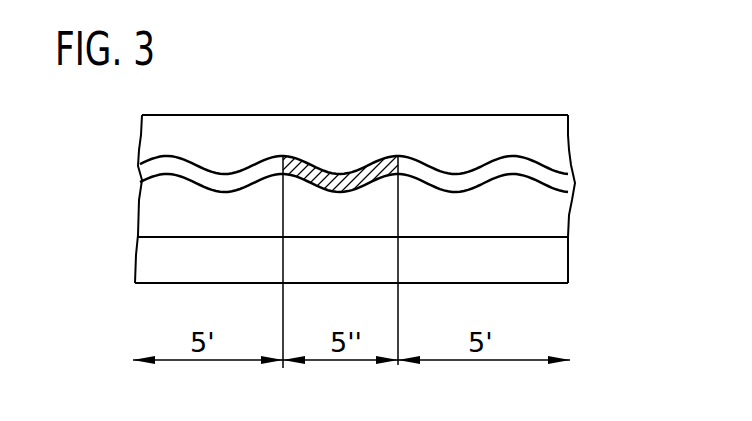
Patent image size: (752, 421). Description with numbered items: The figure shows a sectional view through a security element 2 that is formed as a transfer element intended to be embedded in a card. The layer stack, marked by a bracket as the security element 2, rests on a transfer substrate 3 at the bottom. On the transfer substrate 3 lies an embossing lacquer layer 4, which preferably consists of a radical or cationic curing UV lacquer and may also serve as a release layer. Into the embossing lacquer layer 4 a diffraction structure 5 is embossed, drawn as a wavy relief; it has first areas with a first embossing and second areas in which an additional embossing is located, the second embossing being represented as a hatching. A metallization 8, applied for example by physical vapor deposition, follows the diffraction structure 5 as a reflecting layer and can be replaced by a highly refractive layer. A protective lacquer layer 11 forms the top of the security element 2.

The security element 2 is at (113, 110).
The transfer substrate 3 is at (563, 265).
The embossing lacquer layer 4 is at (563, 222).
The diffraction structure 5 is at (562, 188).
The metallization 8 is at (572, 180).
The protective lacquer layer 11 is at (555, 133).